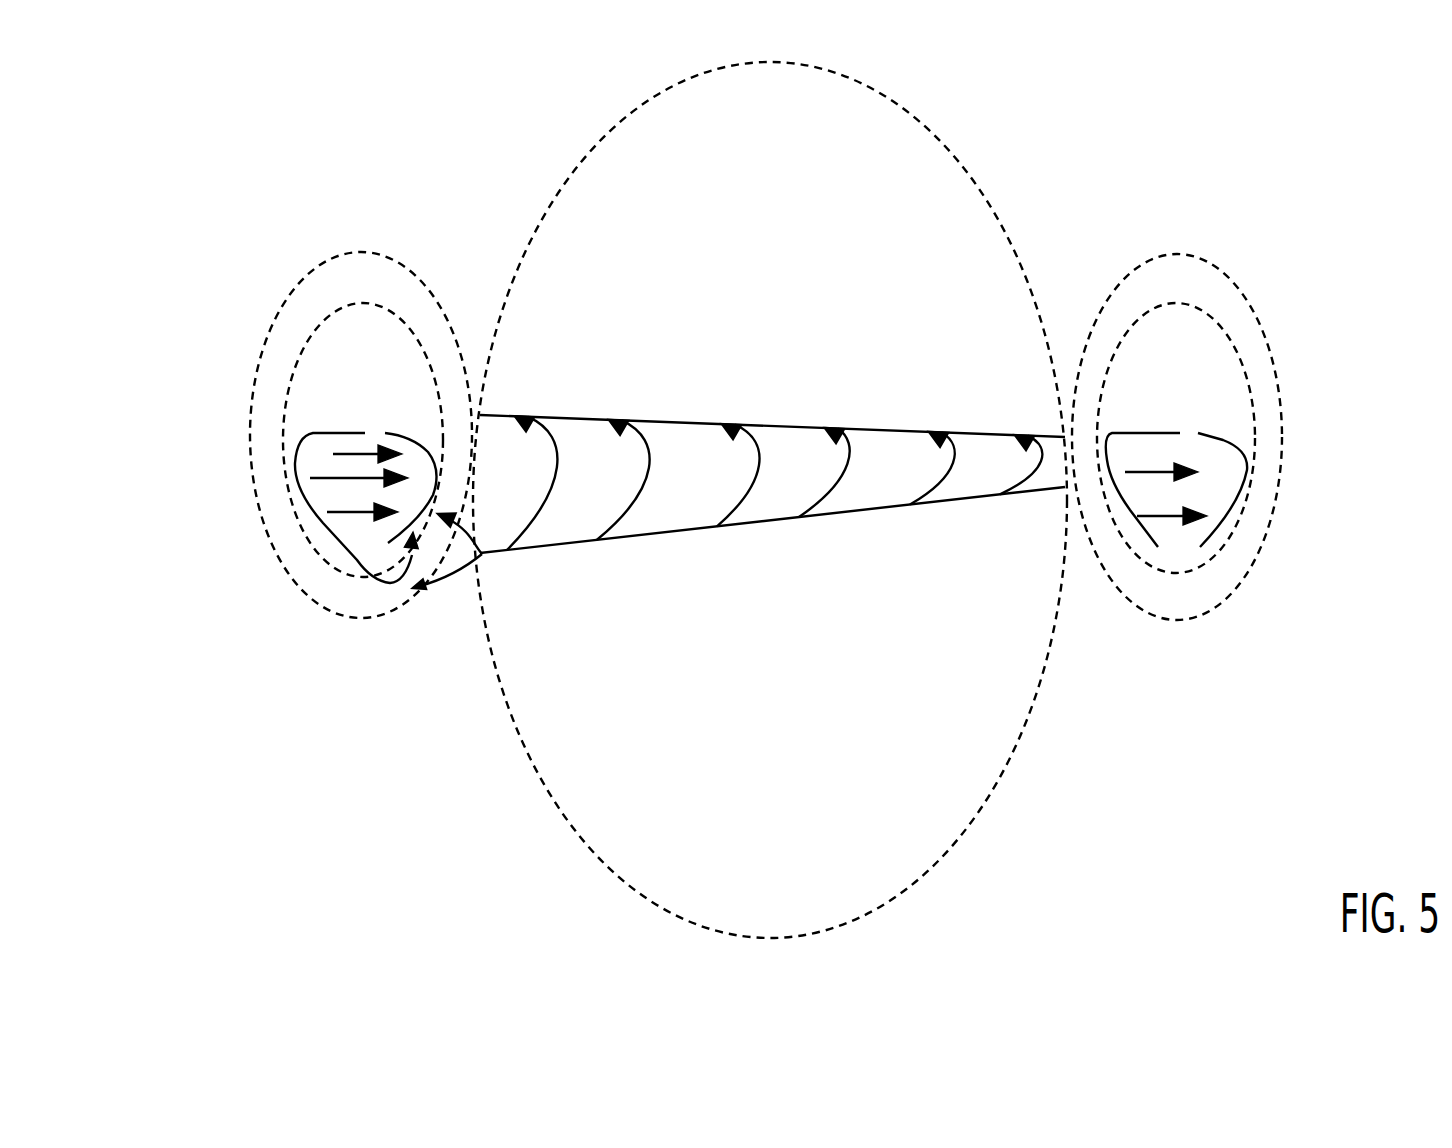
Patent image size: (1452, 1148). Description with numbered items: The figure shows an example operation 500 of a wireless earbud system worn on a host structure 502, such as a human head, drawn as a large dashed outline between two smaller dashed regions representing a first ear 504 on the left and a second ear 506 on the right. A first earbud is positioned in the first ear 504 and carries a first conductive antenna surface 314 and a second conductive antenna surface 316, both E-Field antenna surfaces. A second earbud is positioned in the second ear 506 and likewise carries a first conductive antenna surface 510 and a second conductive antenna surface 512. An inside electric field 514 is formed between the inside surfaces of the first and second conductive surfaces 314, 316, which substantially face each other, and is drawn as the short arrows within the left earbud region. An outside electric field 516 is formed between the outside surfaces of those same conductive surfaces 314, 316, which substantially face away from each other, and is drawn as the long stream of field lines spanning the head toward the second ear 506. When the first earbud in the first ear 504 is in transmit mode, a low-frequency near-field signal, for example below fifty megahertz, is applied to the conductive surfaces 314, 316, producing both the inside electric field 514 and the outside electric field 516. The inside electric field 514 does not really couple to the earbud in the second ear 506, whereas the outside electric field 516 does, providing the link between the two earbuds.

The example operation 500 is at (180, 170).
The host structure 502 is at (600, 135).
The first ear 504 is at (330, 262).
The second conductive antenna surface 316 is at (407, 422).
The first conductive antenna surface 314 is at (288, 440).
The inside electric field 514 is at (330, 490).
The outside electric field 516 is at (557, 443).
The second ear 506 is at (1208, 264).
The first conductive antenna surface 510 is at (1133, 422).
The second conductive antenna surface 512 is at (1221, 424).